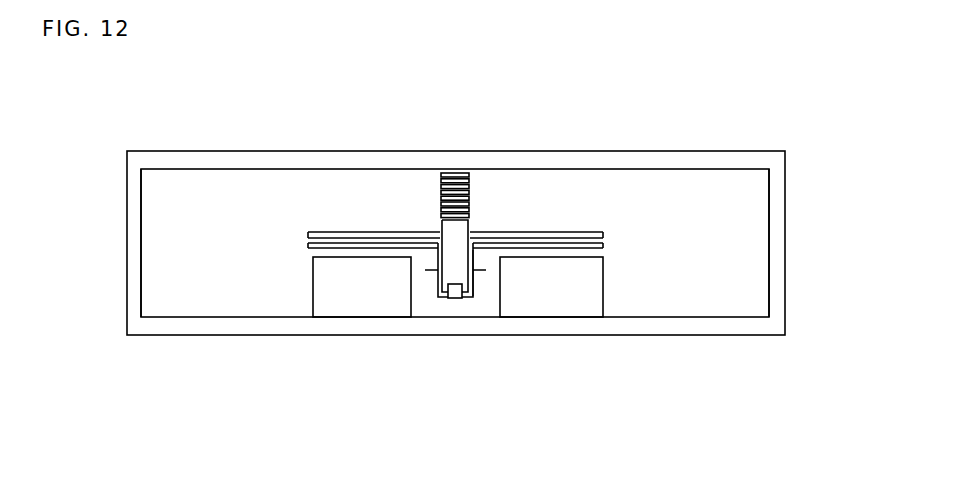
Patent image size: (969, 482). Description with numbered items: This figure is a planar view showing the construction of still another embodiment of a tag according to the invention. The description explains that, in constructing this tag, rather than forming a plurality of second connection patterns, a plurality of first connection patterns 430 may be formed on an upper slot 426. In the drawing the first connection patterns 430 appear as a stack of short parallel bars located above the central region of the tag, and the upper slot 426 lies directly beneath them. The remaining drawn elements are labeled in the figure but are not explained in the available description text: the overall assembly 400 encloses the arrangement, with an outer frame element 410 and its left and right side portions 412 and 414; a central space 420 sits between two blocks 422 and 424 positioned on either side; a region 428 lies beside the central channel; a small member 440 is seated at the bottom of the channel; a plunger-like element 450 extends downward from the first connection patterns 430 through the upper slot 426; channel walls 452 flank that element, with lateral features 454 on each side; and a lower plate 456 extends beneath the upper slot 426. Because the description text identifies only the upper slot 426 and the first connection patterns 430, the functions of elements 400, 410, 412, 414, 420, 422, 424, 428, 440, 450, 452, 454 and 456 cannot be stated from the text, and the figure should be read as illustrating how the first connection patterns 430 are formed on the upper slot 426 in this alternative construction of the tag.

The battery module 400 is at (780, 202).
The case 410 is at (709, 167).
The first side wall of case 412 is at (147, 257).
The second side wall of case 414 is at (762, 233).
The accommodation space 420 is at (421, 306).
The first battery cell 422 is at (315, 256).
The second battery cell 424 is at (602, 256).
The upper slot 426 is at (466, 229).
The gap region 428 is at (485, 296).
The first connection patterns 430 is at (455, 196).
The contact member 440 is at (455, 298).
The plunger 450 is at (437, 234).
The guide walls 452 is at (443, 297).
The protrusions 454 is at (438, 268).
The lower connecting plate 456 is at (510, 246).